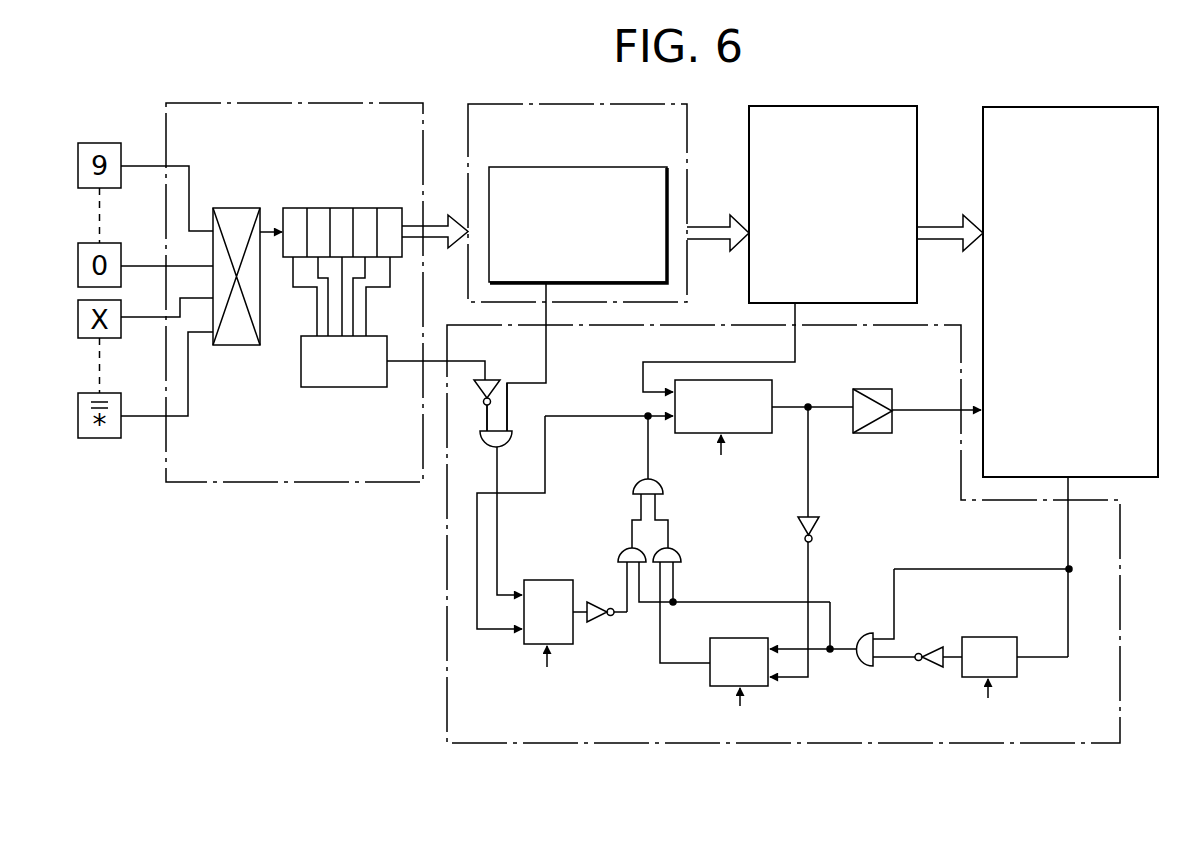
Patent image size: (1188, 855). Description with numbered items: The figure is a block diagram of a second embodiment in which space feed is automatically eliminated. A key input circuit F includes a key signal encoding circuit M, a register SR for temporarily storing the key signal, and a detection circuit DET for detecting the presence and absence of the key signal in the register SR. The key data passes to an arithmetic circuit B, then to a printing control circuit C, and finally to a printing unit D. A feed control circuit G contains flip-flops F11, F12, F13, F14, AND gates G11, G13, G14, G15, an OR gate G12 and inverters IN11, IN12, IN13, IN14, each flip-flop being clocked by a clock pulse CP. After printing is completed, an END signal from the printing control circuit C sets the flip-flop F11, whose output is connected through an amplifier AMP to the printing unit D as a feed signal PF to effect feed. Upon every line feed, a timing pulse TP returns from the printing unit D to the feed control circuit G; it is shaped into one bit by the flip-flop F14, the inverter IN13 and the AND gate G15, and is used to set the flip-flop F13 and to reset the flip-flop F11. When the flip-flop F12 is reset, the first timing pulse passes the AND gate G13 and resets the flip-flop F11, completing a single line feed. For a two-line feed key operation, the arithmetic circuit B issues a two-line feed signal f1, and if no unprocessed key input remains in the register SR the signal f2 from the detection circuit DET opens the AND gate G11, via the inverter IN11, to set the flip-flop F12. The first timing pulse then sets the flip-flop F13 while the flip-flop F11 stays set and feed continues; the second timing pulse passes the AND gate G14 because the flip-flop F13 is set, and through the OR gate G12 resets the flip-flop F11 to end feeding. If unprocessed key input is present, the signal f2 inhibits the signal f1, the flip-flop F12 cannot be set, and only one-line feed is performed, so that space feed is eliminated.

The key input circuit F is at (294, 276).
The arithmetic circuit B is at (577, 186).
The printing control circuit C is at (833, 187).
The printing unit D is at (1070, 274).
The feed control circuit G is at (783, 555).
The key signal encoding circuit M is at (236, 262).
The register SR is at (342, 218).
The detection circuit DET is at (344, 377).
The END signal END is at (719, 347).
The inverter IN11 is at (498, 380).
The inverter IN12 is at (822, 532).
The inverter IN13 is at (925, 668).
The inverter IN14 is at (601, 636).
The two-line feed signal f1 is at (538, 394).
The key input absence signal f2 is at (474, 418).
The AND gate G11 is at (503, 449).
The OR gate G12 is at (634, 486).
The AND gate G13 is at (620, 551).
The AND gate G14 is at (682, 551).
The AND gate G15 is at (864, 633).
The flip-flop F11 is at (723, 406).
The flip-flop F12 is at (537, 616).
The flip-flop F13 is at (749, 665).
The flip-flop F14 is at (1015, 657).
The amplifier AMP is at (877, 389).
The feed signal PF is at (936, 397).
The timing pulse signal TP is at (999, 567).
The clock pulse CP is at (767, 584).